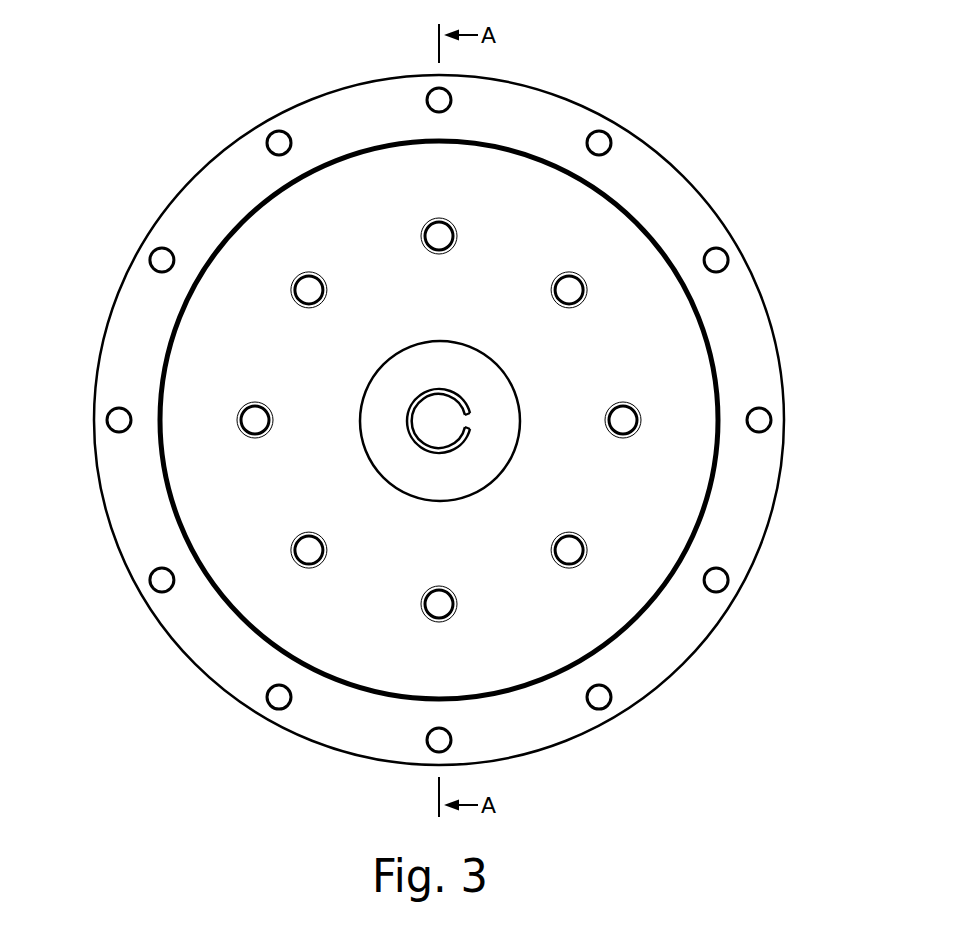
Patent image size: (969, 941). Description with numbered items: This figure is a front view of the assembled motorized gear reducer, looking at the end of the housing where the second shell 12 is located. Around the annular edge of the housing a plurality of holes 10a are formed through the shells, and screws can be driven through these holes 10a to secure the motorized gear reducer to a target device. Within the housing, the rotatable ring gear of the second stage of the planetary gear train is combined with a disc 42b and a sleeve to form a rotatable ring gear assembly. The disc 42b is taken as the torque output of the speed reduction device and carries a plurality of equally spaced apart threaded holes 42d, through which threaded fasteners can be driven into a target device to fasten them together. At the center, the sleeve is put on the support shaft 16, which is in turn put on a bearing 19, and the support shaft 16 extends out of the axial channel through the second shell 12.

The second shell 12 is at (218, 637).
The holes 10a is at (600, 143).
The bearing 19 is at (387, 402).
The support shaft 16 is at (438, 420).
The disc 42b is at (600, 587).
The threaded holes 42d is at (622, 421).